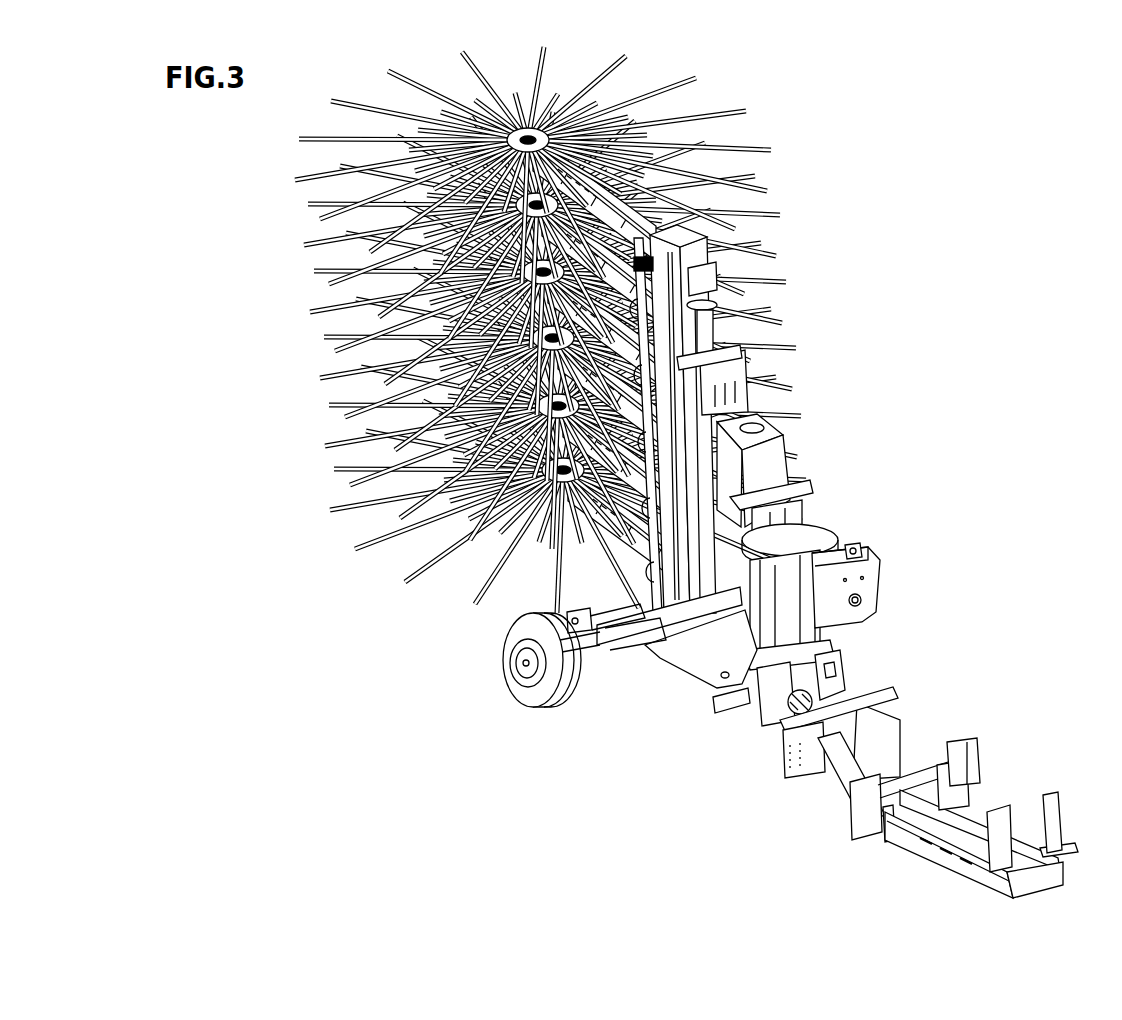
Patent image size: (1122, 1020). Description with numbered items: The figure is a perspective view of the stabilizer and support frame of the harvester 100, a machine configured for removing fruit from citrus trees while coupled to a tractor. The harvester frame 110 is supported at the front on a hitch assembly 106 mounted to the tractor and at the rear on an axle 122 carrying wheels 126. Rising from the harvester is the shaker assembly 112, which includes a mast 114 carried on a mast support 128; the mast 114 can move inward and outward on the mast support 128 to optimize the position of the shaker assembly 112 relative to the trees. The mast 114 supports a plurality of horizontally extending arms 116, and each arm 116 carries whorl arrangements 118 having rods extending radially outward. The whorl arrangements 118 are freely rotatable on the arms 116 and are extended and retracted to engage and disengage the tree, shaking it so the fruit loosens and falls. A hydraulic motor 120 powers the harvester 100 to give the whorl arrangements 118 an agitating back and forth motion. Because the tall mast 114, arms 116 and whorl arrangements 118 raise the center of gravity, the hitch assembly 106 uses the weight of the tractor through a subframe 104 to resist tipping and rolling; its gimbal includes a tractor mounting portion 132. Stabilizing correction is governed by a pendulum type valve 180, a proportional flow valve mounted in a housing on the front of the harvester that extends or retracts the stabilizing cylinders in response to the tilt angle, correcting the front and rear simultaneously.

The harvester 100 is at (1013, 296).
The subframe 104 is at (967, 750).
The hitch assembly 106 is at (857, 670).
The harvester frame 110 is at (693, 655).
The shaker assembly 112 is at (577, 387).
The mast 114 is at (700, 252).
The arms 116 is at (577, 321).
The whorl arrangements 118 is at (787, 104).
The hydraulic motor 120 is at (847, 597).
The axle 122 is at (584, 614).
The wheels 126 is at (547, 707).
The mast support 128 is at (765, 463).
The tractor mounting portion 132 is at (883, 692).
The pendulum type valve 180 is at (857, 543).